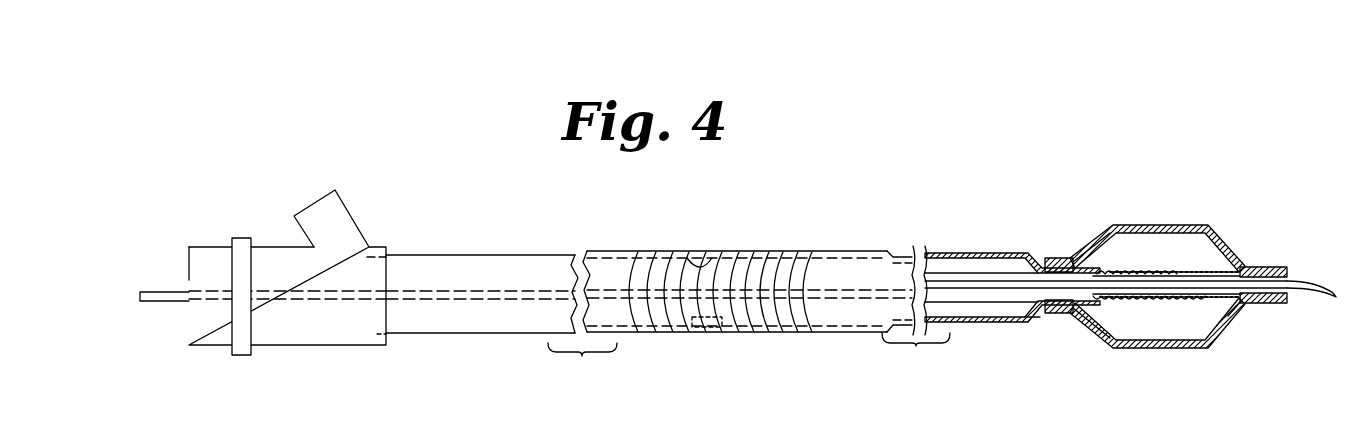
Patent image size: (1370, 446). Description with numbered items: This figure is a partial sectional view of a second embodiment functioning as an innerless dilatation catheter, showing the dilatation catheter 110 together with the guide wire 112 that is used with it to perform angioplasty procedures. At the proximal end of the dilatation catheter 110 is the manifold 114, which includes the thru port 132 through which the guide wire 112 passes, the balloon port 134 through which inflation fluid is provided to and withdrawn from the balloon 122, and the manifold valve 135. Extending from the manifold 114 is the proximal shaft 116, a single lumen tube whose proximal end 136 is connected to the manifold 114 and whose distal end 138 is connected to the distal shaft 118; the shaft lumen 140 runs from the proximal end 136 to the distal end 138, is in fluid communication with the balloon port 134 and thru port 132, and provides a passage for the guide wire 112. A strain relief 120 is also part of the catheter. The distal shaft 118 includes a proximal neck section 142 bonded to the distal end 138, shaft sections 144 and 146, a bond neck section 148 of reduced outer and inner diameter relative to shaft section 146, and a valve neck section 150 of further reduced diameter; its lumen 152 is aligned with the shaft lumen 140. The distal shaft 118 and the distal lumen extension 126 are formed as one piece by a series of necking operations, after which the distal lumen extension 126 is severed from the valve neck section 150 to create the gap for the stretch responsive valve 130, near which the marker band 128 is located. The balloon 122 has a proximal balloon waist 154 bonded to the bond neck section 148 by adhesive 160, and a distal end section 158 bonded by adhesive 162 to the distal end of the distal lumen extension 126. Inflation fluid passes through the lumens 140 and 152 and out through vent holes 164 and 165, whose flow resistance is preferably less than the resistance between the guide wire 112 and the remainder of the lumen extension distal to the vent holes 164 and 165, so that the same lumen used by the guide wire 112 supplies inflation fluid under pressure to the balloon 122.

The dilatation catheter 110 is at (865, 206).
The guide wire 112 is at (165, 302).
The manifold 114 is at (317, 346).
The proximal shaft 116 is at (478, 253).
The distal shaft 118 is at (882, 250).
The strain relief 120 is at (653, 333).
The balloon 122 is at (1192, 223).
The distal lumen extension 126 is at (1213, 301).
The marker band 128 is at (1170, 268).
The stretch responsive valve 130 is at (1128, 272).
The thru port 132 is at (189, 273).
The balloon port 134 is at (314, 206).
The manifold valve 135 is at (238, 238).
The proximal end 136 is at (380, 335).
The distal end 138 is at (697, 332).
The shaft lumen 140 is at (585, 253).
The proximal neck section 142 is at (736, 266).
The shaft section 144 is at (842, 249).
The shaft section 146 is at (958, 253).
The bond neck section 148 is at (1053, 258).
The valve neck section 150 is at (1108, 297).
The lumen 152 is at (970, 307).
The proximal balloon waist 154 is at (1060, 313).
The distal end section 158 is at (1260, 297).
The adhesive 160 is at (1048, 318).
The adhesive 162 is at (1277, 267).
The vent hole 164 is at (1093, 240).
The vent hole 165 is at (1083, 303).